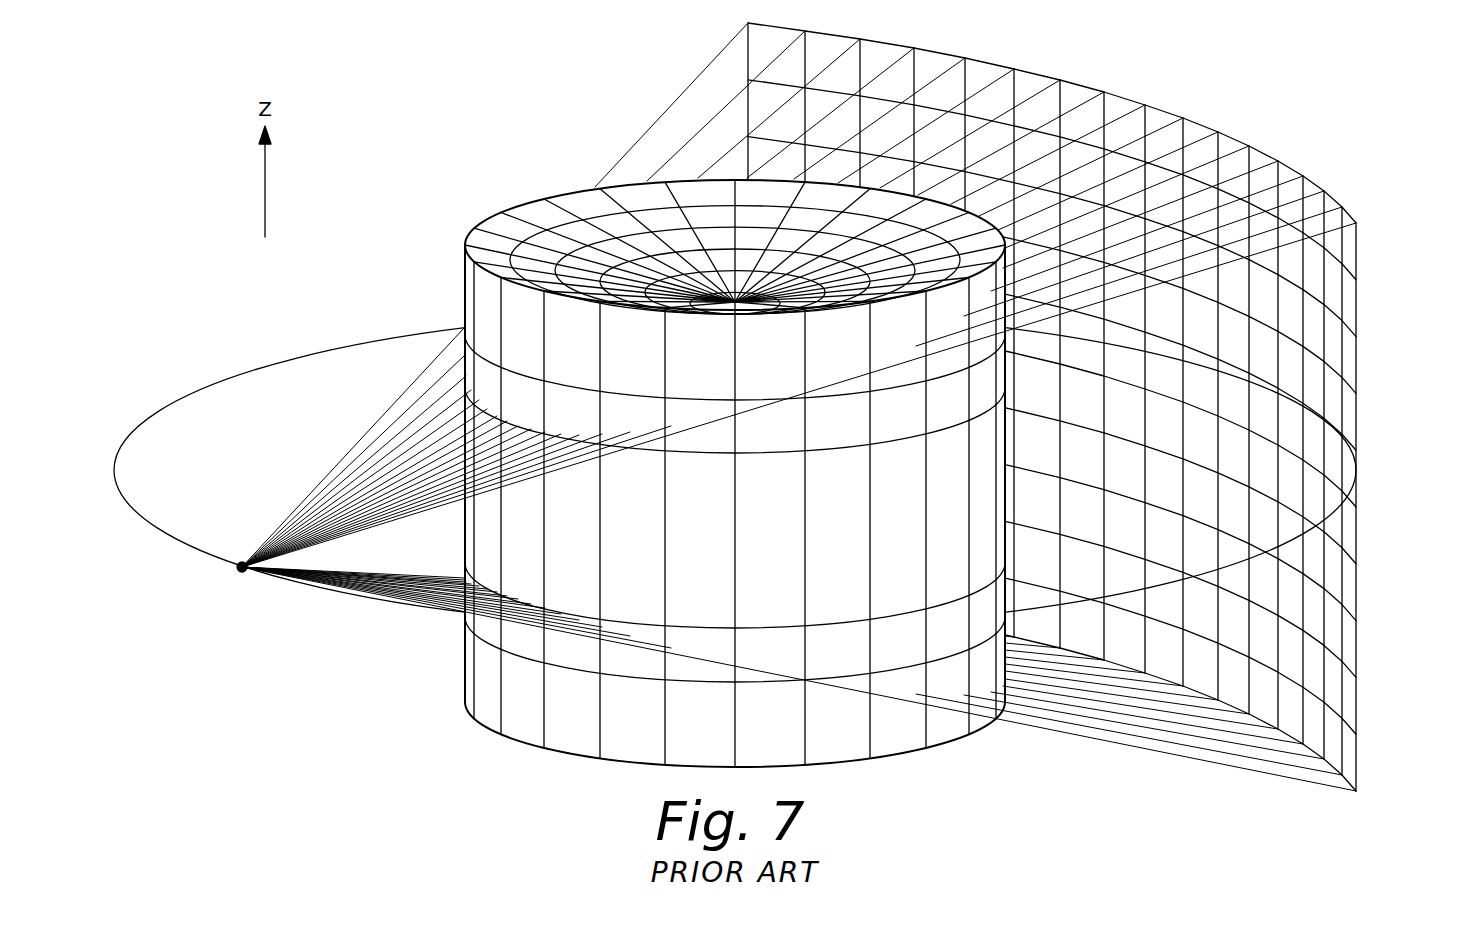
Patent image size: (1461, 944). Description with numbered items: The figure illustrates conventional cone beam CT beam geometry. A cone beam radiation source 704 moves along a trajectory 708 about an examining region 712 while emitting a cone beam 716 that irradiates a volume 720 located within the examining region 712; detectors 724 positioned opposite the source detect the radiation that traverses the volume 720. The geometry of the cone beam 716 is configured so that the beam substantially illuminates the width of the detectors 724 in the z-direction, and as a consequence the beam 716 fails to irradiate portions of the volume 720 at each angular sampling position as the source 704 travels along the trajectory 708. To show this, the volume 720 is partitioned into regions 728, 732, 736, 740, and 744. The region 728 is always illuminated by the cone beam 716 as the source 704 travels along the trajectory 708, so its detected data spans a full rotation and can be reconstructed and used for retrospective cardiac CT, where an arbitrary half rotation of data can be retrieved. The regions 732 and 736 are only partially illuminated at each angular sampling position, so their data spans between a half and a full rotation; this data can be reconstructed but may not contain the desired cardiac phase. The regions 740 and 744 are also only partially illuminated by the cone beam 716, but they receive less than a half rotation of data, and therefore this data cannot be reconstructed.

The cone beam radiation source 704 is at (242, 572).
The trajectory 708 is at (270, 361).
The examining region 712 is at (303, 425).
The cone beam 716 is at (291, 503).
The volume 720 is at (673, 458).
The detectors 724 is at (1360, 317).
The region 728 is at (525, 538).
The region 732 is at (520, 397).
The region 736 is at (607, 657).
The region 740 is at (517, 325).
The region 744 is at (688, 720).